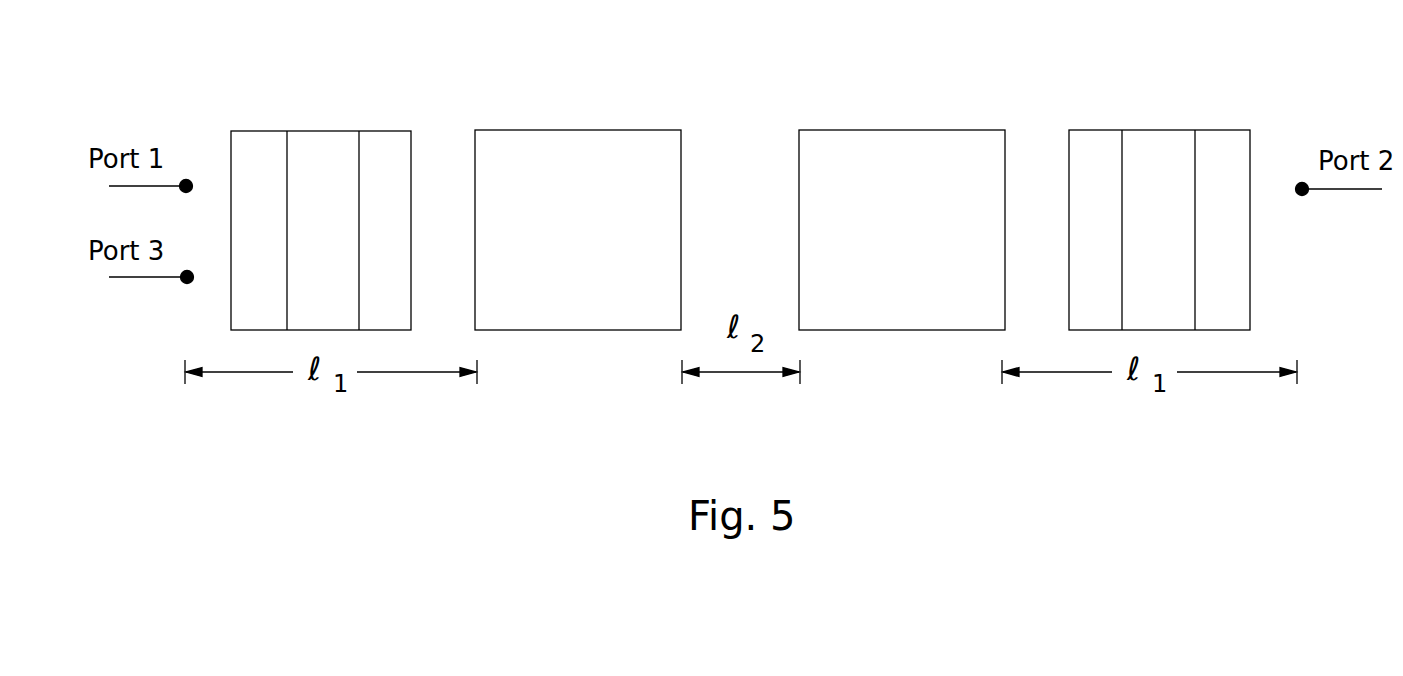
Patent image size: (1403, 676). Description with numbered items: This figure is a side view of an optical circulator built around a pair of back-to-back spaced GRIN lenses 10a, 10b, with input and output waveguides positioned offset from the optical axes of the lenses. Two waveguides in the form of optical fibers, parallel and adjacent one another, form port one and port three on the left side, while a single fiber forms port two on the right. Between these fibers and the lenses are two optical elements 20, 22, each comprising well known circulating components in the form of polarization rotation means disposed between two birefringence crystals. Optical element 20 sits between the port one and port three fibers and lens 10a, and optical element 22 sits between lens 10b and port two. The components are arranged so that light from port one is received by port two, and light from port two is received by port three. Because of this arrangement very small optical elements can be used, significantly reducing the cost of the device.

The optical element 20 is at (327, 128).
The GRIN lens 10a is at (588, 142).
The GRIN lens 10b is at (898, 148).
The optical element 22 is at (1167, 128).